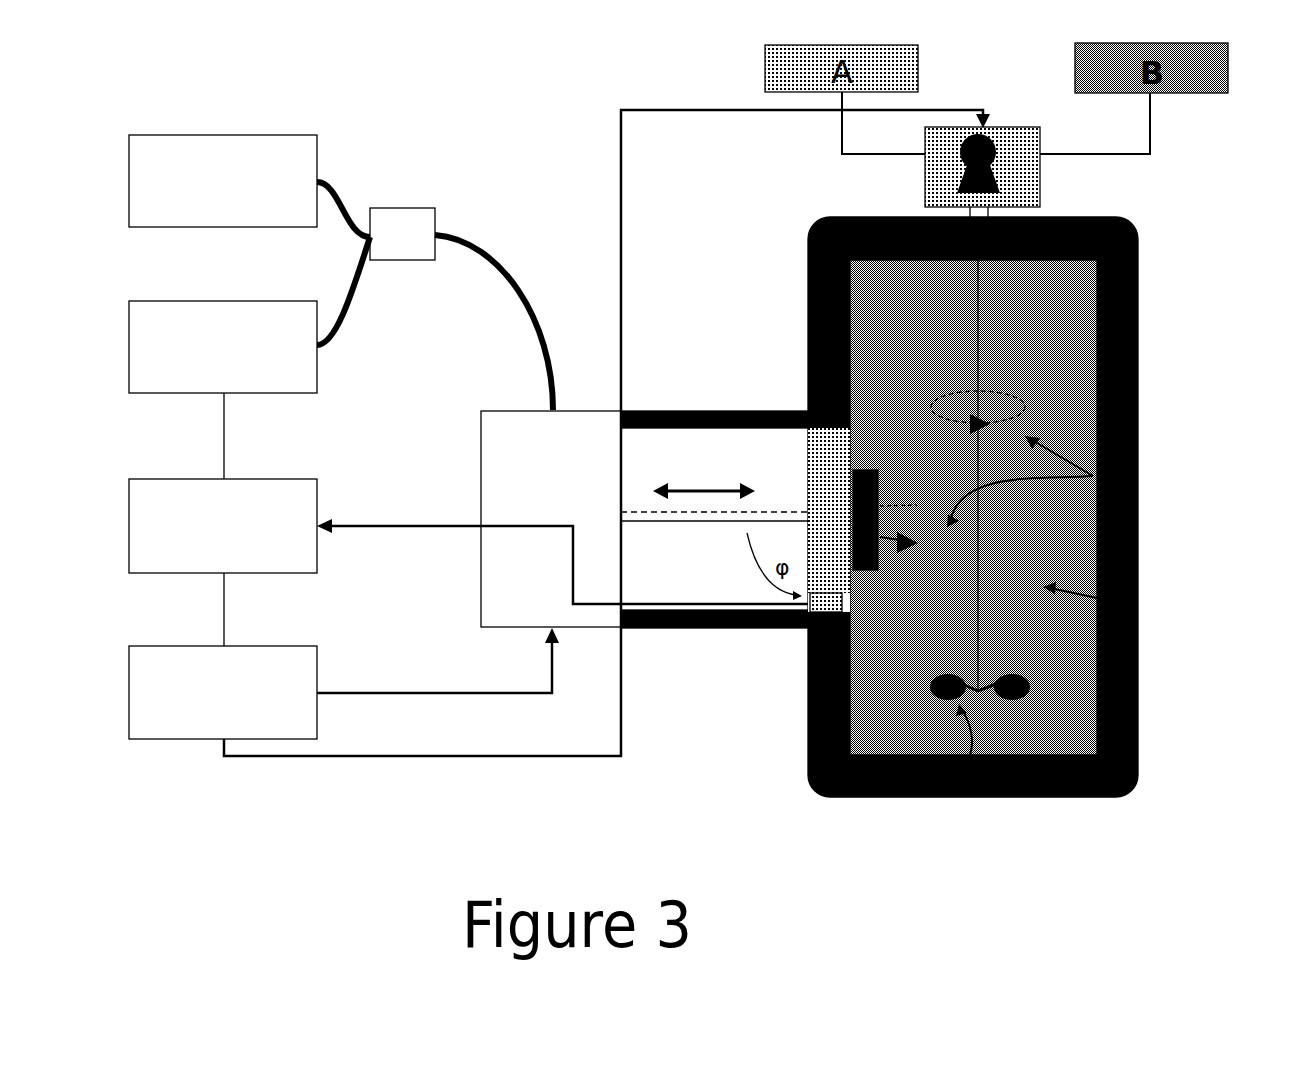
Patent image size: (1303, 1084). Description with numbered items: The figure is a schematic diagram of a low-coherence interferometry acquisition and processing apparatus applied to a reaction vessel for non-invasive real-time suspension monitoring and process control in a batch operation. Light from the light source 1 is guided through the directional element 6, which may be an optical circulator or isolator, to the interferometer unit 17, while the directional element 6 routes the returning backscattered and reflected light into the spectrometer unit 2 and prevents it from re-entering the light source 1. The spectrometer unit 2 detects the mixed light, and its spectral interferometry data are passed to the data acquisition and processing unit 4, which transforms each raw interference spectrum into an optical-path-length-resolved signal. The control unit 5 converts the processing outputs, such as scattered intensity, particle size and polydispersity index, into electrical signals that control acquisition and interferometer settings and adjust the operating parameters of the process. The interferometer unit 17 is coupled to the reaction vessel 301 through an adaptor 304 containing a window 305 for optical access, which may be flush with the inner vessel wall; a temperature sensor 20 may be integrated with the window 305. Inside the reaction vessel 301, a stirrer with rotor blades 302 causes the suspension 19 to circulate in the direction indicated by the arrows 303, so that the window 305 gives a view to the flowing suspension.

The light source 1 is at (223, 181).
The spectrometer unit 2 is at (223, 347).
The data acquisition and processing unit 4 is at (223, 526).
The control unit 5 is at (223, 692).
The directional element 6 is at (402, 234).
The interferometer unit 17 is at (476, 424).
The suspension 19 is at (1138, 597).
The temperature sensor 20 is at (808, 614).
The reaction vessel 301 is at (1042, 507).
The rotor blades 302 is at (956, 798).
The arrows 303 is at (1140, 495).
The adaptor 304 is at (687, 408).
The window 305 is at (808, 470).